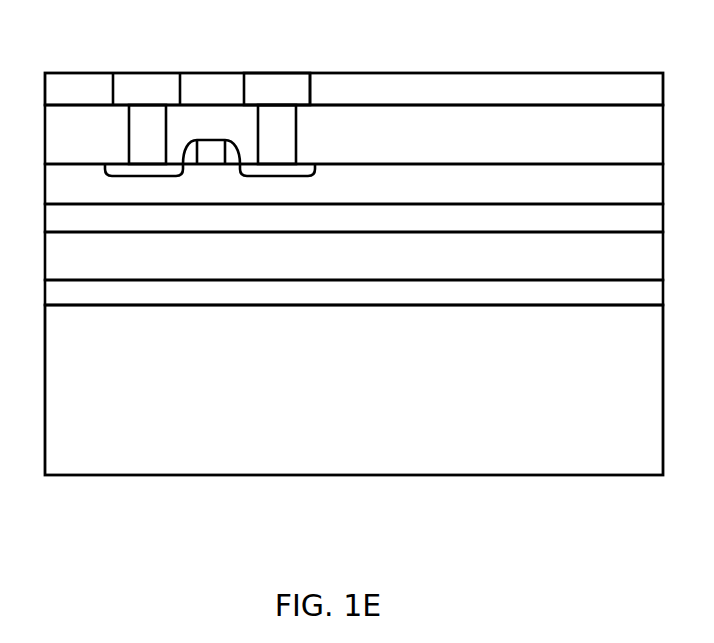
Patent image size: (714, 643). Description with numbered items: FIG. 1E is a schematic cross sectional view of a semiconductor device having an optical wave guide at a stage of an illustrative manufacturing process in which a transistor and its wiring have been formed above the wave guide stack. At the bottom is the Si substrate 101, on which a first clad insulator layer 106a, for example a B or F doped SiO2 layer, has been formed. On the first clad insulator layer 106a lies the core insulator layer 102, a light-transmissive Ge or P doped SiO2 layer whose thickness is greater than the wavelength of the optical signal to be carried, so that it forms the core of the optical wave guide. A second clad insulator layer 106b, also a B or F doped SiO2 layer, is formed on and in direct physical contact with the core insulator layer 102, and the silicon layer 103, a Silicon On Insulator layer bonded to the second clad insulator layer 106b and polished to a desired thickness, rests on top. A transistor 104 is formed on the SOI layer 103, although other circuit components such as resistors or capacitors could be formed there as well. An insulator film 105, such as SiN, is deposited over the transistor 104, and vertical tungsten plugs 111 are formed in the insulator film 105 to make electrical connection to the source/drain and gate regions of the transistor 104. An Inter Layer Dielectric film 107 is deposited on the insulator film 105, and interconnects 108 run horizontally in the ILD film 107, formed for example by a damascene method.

The Si substrate 101 is at (354, 390).
The core insulator layer 102 is at (354, 256).
The silicon layer 103 is at (354, 184).
The transistor 104 is at (211, 168).
The insulator film 105 is at (354, 134).
The first clad insulator layer 106a is at (354, 293).
The second clad insulator layer 106b is at (354, 218).
The Inter Layer Dielectric film 107 is at (354, 89).
The interconnects 108 is at (277, 89).
The vertical tungsten plugs 111 is at (212, 134).